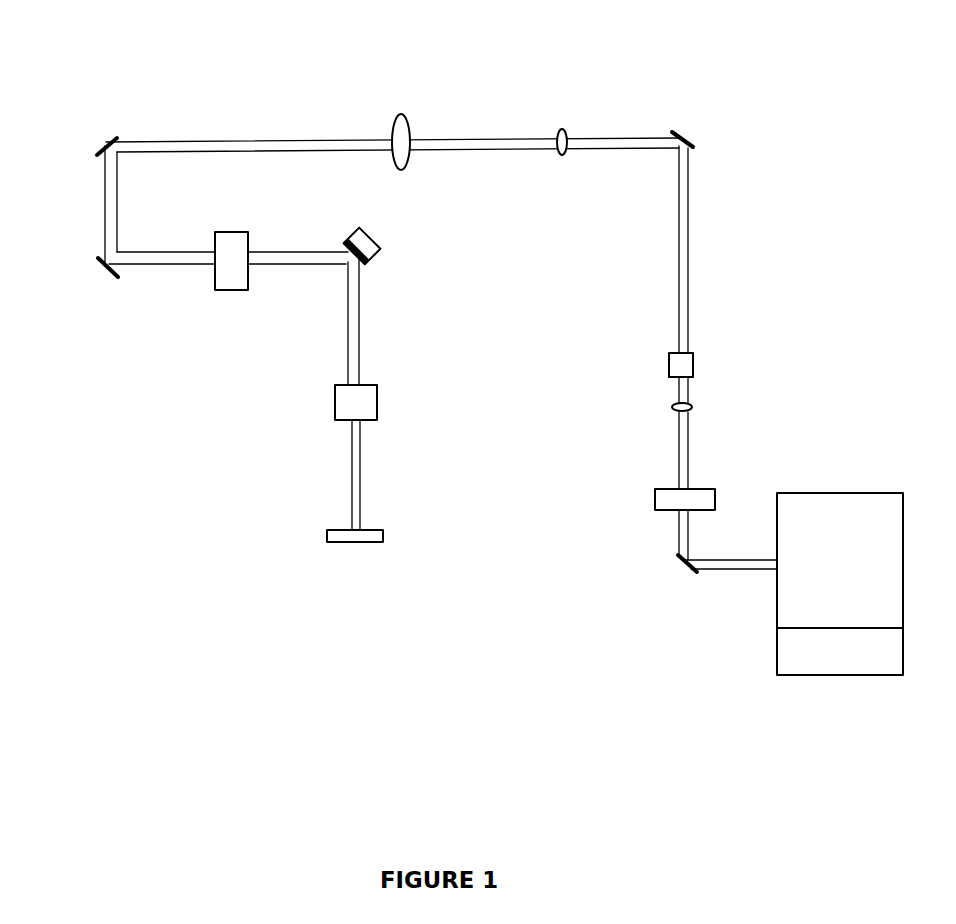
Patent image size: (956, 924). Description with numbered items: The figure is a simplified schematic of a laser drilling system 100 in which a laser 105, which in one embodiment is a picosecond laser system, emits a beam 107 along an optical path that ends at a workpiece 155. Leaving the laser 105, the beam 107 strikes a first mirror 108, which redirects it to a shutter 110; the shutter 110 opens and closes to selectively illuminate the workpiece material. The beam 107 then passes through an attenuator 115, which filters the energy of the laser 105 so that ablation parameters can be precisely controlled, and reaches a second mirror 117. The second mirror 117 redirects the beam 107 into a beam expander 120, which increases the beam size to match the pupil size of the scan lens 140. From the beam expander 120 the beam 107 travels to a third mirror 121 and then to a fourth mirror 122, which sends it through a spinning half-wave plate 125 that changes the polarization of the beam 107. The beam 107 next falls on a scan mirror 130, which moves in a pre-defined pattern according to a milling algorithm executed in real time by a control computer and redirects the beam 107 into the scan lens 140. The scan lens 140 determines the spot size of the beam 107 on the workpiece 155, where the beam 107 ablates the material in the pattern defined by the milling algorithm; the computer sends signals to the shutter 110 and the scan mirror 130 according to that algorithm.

The laser drilling system 100 is at (298, 81).
The laser 105 is at (848, 492).
The beam 107 is at (737, 570).
The first mirror 108 is at (683, 572).
The shutter 110 is at (716, 496).
The attenuator 115 is at (697, 402).
The second mirror 117 is at (690, 144).
The beam expander 120 is at (558, 127).
The third mirror 121 is at (105, 138).
The fourth mirror 122 is at (102, 270).
The spinning half-wave plate 125 is at (232, 289).
The scan mirror 130 is at (432, 212).
The scan lens 140 is at (335, 395).
The workpiece 155 is at (435, 507).